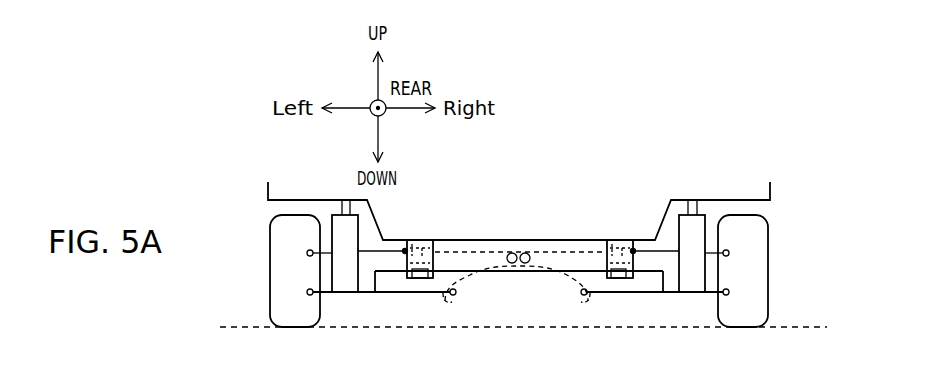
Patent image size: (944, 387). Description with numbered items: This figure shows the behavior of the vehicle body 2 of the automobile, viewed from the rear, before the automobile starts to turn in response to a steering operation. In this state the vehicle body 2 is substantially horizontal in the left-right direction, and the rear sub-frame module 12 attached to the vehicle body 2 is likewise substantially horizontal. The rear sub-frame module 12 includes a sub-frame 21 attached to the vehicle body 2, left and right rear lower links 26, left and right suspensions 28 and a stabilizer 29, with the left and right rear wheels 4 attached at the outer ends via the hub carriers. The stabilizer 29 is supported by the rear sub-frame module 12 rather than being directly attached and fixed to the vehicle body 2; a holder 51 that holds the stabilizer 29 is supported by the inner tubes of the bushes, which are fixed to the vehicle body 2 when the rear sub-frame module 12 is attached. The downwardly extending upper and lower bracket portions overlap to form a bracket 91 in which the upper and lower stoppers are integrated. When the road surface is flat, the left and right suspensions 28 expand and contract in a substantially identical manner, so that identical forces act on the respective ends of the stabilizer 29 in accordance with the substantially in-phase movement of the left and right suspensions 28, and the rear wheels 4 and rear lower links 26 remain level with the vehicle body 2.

The vehicle body 2 is at (267, 188).
The rear wheels 4 is at (280, 268).
The rear sub-frame module 12 is at (518, 244).
The sub-frame 21 is at (500, 271).
The rear lower links 26 is at (365, 293).
The suspensions 28 is at (340, 235).
The stabilizer 29 is at (543, 272).
The holder 51 is at (423, 278).
The bracket 91 is at (430, 252).